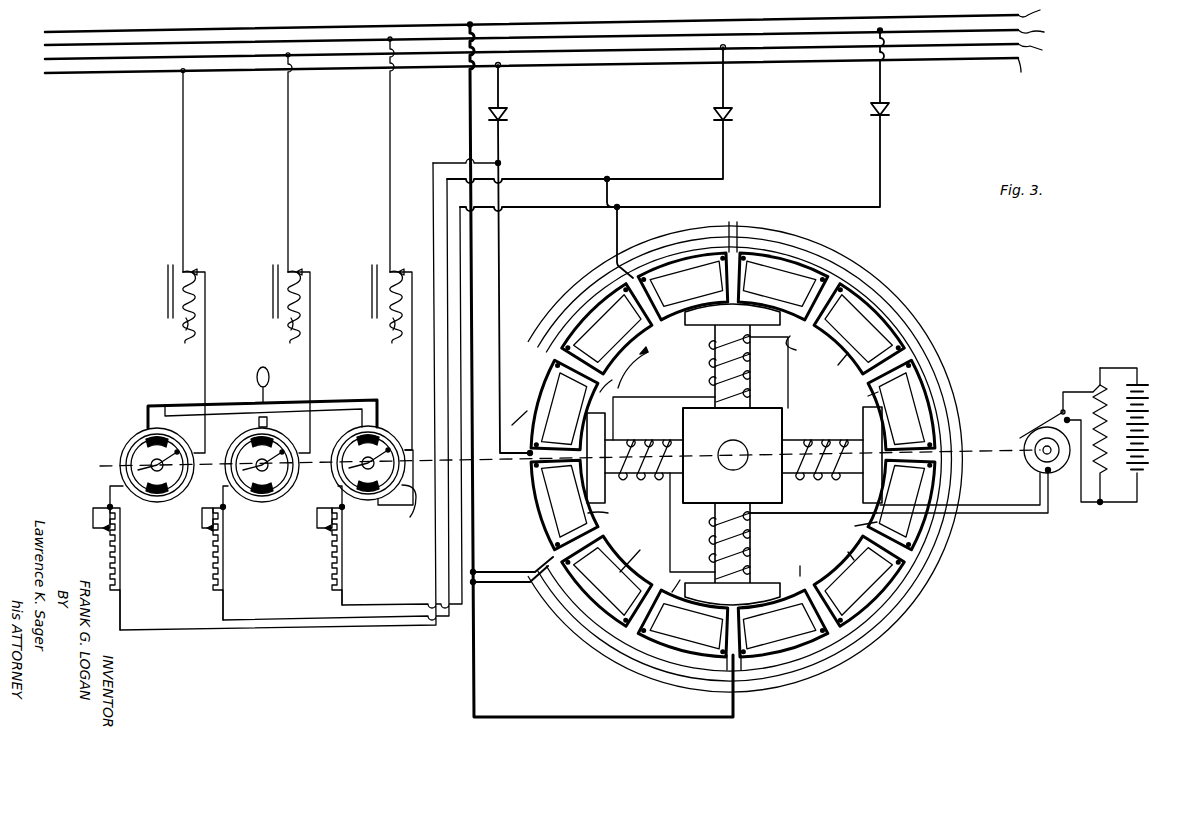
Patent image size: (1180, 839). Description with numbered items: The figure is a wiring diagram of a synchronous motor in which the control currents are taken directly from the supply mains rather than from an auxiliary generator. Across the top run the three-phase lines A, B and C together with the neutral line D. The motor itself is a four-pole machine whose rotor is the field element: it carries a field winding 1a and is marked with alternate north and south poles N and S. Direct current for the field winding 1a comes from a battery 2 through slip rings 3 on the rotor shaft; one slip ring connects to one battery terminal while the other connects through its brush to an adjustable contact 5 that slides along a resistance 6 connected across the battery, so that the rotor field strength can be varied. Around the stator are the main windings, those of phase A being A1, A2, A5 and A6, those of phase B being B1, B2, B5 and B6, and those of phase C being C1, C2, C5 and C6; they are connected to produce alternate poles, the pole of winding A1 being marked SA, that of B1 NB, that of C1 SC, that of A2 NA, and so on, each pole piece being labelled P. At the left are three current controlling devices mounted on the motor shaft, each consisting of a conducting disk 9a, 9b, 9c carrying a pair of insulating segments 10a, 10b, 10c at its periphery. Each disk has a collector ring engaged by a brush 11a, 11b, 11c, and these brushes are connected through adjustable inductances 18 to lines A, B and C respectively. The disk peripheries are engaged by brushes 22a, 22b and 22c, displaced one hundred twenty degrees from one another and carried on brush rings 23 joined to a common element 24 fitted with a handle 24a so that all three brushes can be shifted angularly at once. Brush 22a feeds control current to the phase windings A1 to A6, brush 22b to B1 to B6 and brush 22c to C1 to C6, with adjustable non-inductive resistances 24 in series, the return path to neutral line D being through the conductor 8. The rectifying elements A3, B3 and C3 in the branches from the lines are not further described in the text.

The field winding 1a is at (752, 376).
The battery 2 is at (1148, 400).
The slip rings 3 is at (1022, 462).
The adjustable contact 5 is at (1086, 390).
The resistance 6 is at (1104, 369).
The conductor 8 is at (472, 532).
The conducting disk 9a is at (171, 492).
The conducting disk 9b is at (276, 487).
The conducting disk 9c is at (384, 484).
The insulating segments 10a is at (143, 432).
The insulating segments 10b is at (273, 439).
The insulating segments 10c is at (378, 435).
The brush 11a is at (138, 460).
The brush 11b is at (255, 453).
The brush 11c is at (354, 452).
The adjustable inductances 18 is at (188, 320).
The brush 22a is at (104, 490).
The brush 22b is at (266, 415).
The brush 22c is at (418, 519).
The brush rings 23 is at (190, 486).
The common element 24 is at (122, 552).
The handle 24a is at (260, 370).
The three-phase line A is at (536, 71).
The three-phase line B is at (550, 53).
The three-phase line C is at (552, 36).
The neutral line D is at (549, 20).
The rectifier A A3 is at (503, 112).
The rectifier B B3 is at (718, 112).
The rectifier C C3 is at (885, 107).
The phase winding A1 is at (512, 426).
The phase winding B1 is at (600, 394).
The phase winding C1 is at (645, 363).
The phase winding A2 is at (798, 348).
The phase winding B2 is at (833, 367).
The phase winding C2 is at (861, 397).
The phase winding A5 is at (854, 527).
The phase winding B5 is at (843, 558).
The phase winding C5 is at (808, 564).
The phase winding A6 is at (675, 588).
The phase winding B6 is at (633, 555).
The phase winding C6 is at (607, 512).
The stator pole P is at (615, 313).
The south pole S is at (734, 455).
The north pole N is at (731, 458).